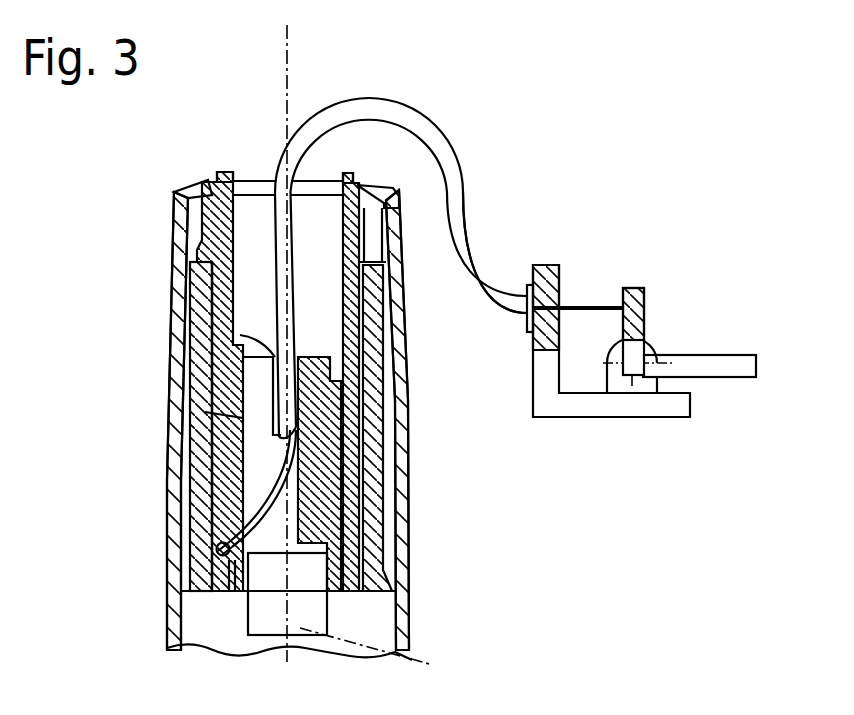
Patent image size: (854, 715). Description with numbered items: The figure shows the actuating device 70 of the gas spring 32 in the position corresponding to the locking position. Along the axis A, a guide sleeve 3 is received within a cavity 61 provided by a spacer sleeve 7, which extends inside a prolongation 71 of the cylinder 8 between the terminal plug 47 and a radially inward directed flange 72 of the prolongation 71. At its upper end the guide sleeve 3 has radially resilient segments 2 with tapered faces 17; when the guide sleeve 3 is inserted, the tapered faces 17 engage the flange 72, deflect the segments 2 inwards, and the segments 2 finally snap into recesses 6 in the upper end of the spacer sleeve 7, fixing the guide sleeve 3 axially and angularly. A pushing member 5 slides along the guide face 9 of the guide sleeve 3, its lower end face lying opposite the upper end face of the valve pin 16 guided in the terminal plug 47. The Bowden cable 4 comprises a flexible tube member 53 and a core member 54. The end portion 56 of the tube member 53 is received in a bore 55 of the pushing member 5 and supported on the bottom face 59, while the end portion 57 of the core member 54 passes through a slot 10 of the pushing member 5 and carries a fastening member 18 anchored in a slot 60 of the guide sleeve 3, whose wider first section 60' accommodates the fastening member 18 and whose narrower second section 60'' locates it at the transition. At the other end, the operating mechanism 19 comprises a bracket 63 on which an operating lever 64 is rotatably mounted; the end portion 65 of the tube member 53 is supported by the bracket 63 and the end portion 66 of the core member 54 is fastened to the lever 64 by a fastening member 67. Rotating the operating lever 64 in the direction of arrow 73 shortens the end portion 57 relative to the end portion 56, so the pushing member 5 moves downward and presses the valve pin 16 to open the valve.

The axis A is at (282, 60).
The segments 2 is at (390, 208).
The guide sleeve 3 is at (372, 322).
The Bowden cable 4 is at (377, 284).
The pushing member 5 is at (310, 470).
The recesses 6 is at (319, 421).
The spacer sleeve 7 is at (372, 495).
The cylinder 8 is at (436, 420).
The guide face 9 is at (200, 456).
The slot 10 is at (245, 470).
The valve pin 16 is at (383, 657).
The tapered faces 17 is at (380, 258).
The fastening member 18 is at (205, 590).
The operating mechanism 19 is at (660, 351).
The gas spring 32 is at (412, 612).
The terminal plug 47 is at (320, 650).
The flexible tube member 53 is at (423, 127).
The core member 54 is at (205, 412).
The bore 55 is at (240, 335).
The end portion of the flexible tube 56 is at (280, 375).
The end portion of the core member 57 is at (226, 541).
The bottom face 59 is at (300, 433).
The slot 60 is at (208, 636).
The first section 60' is at (287, 632).
The second section 60'' is at (162, 557).
The cavity 61 is at (190, 362).
The bracket 63 is at (587, 418).
The operating lever 64 is at (727, 365).
The end portion of the flexible tube member 65 is at (508, 297).
The end portion of the core member 66 is at (607, 303).
The fastening member 67 is at (645, 308).
The actuating device 70 is at (486, 118).
The prolongation 71 is at (402, 513).
The flange 72 is at (222, 172).
The arrow 73 is at (722, 430).